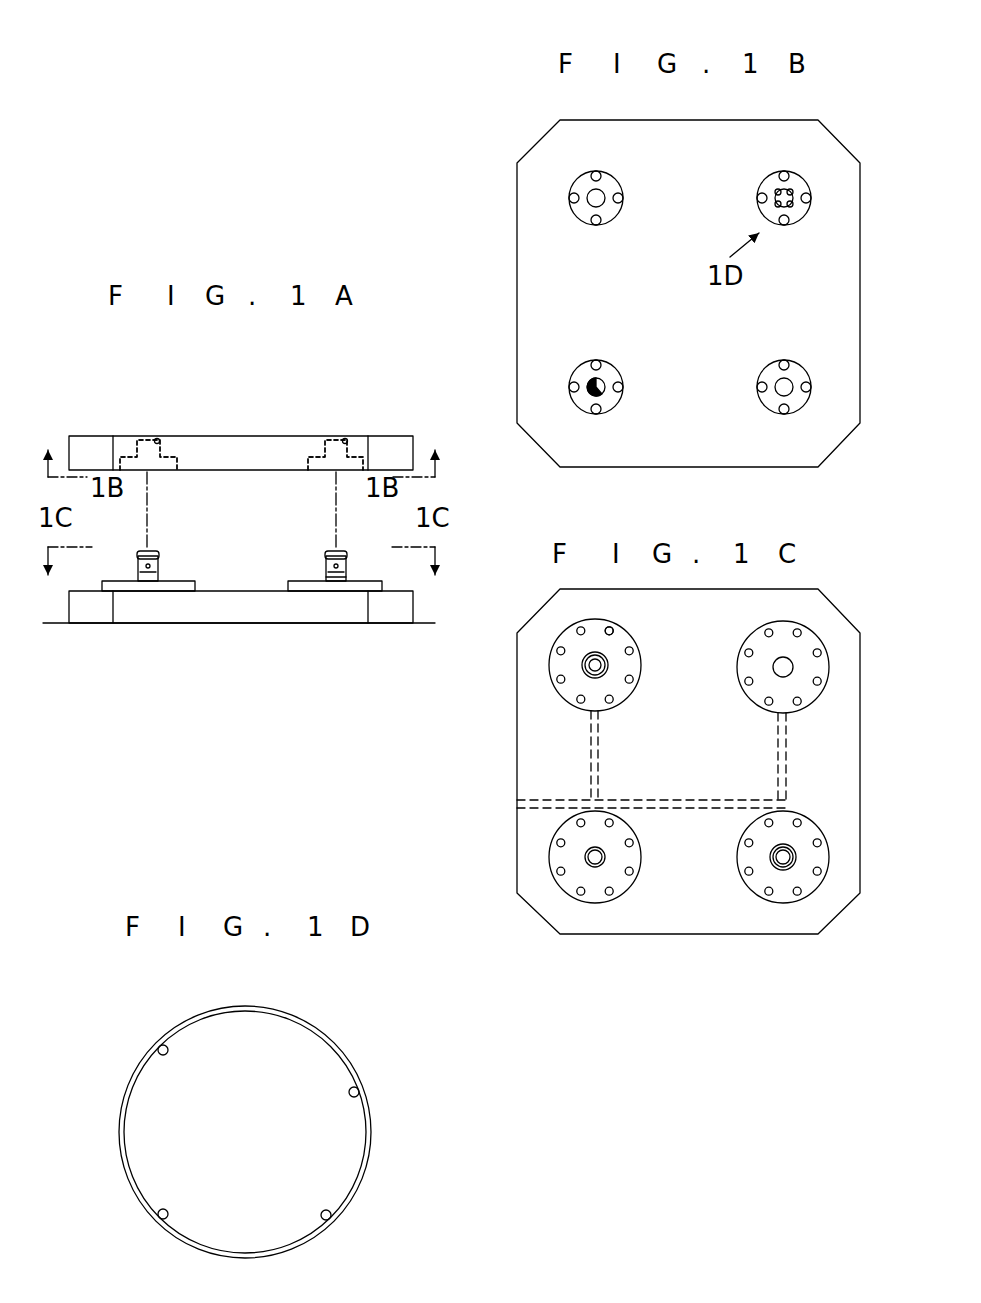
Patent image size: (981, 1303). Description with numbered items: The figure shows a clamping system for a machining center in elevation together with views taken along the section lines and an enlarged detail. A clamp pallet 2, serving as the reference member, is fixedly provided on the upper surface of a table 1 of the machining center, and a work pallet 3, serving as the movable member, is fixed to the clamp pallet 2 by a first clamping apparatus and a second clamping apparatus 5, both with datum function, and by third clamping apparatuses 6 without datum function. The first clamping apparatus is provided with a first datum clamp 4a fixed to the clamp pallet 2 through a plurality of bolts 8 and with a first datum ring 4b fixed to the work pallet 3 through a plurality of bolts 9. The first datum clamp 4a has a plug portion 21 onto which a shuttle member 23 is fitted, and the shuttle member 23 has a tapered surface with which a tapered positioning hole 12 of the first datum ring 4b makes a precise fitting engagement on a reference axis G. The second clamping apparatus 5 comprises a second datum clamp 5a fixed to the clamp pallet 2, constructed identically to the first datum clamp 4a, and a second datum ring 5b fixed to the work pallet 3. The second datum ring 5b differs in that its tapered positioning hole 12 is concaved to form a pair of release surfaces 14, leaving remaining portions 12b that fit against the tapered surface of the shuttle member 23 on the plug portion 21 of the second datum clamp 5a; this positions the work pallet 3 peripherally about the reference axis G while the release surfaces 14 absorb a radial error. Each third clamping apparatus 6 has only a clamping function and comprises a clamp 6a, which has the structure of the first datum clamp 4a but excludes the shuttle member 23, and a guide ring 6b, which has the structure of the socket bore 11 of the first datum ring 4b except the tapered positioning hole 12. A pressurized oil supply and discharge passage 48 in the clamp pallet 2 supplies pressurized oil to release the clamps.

In FIG. 1A, the table 1 is at (425, 623).
In FIG. 1A, the clamp pallet 2 is at (248, 612).
In FIG. 1C, the clamp pallet 2 is at (514, 838).
In FIG. 1A, the work pallet 3 is at (248, 443).
In FIG. 1B, the work pallet 3 is at (514, 235).
In FIG. 1C, the first datum clamp 4a is at (627, 707).
In FIG. 1B, the first datum ring 4b is at (616, 413).
In FIG. 1A, the second clamping apparatus 5 is at (282, 486).
In FIG. 1A, the second datum clamp 5a is at (303, 581).
In FIG. 1C, the second datum clamp 5a is at (752, 905).
In FIG. 1A, the second datum ring 5b is at (307, 460).
In FIG. 1B, the second datum ring 5b is at (793, 227).
In FIG. 1D, the second datum ring 5b is at (277, 1132).
In FIG. 1A, the third clamping apparatus 6 is at (214, 486).
In FIG. 1A, the clamp 6a is at (185, 581).
In FIG. 1C, the clamp 6a is at (804, 710).
In FIG. 1A, the guide ring 6b is at (177, 463).
In FIG. 1B, the guide ring 6b is at (611, 225).
In FIG. 1C, the bolts 8 is at (612, 630).
In FIG. 1B, the bolts 9 is at (577, 383).
In FIG. 1A, the socket bore 11 is at (156, 439).
In FIG. 1B, the socket bore 11 is at (600, 197).
In FIG. 1B, the tapered positioning hole 12 is at (598, 386).
In FIG. 1D, the remaining portions 12b is at (160, 1046).
In FIG. 1B, the release surfaces 14 is at (791, 193).
In FIG. 1D, the release surfaces 14 is at (357, 1088).
In FIG. 1A, the plug portion 21 is at (140, 553).
In FIG. 1C, the plug portion 21 is at (598, 663).
In FIG. 1A, the shuttle member 23 is at (347, 575).
In FIG. 1C, the shuttle member 23 is at (607, 658).
In FIG. 1C, the pressurized oil supply and discharge passage 48 is at (590, 747).
In FIG. 1B, the reference axis G is at (595, 392).